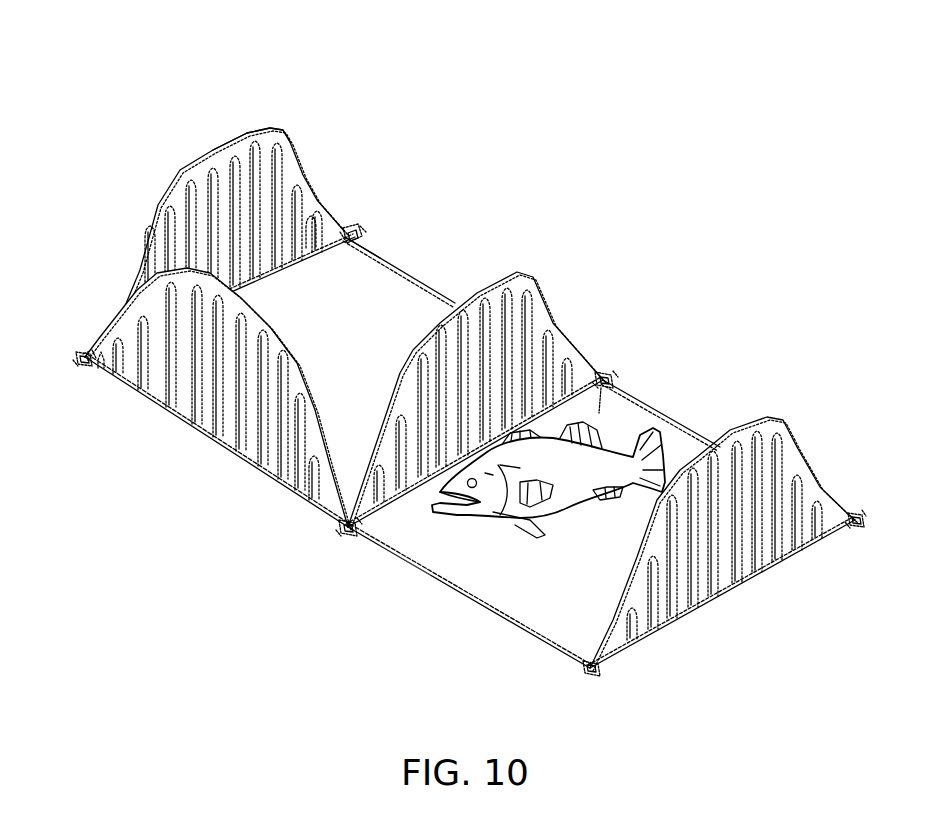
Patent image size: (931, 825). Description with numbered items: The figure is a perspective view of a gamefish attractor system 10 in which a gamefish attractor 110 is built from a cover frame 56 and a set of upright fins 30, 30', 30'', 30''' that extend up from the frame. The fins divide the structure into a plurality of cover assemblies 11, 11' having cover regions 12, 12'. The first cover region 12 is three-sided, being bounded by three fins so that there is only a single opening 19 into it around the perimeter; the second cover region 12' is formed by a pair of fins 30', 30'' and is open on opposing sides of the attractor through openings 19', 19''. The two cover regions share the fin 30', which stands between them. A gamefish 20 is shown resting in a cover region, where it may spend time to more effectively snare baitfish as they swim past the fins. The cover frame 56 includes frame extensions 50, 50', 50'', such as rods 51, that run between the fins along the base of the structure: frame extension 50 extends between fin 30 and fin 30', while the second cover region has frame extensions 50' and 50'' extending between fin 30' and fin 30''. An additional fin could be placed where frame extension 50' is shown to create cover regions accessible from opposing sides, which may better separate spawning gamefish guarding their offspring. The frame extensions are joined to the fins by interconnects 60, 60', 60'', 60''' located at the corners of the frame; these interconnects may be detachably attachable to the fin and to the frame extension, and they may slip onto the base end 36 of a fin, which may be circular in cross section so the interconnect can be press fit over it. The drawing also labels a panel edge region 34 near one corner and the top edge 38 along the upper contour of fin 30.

The gamefish attractor system 10 is at (147, 162).
The gamefish attractor 110 is at (217, 153).
The cover assembly 11 is at (437, 239).
The cover assembly 11' is at (735, 376).
The cover region 12 is at (387, 242).
The cover region 12' is at (690, 378).
The opening 19 is at (498, 242).
The opening 19' is at (640, 386).
The opening 19'' is at (489, 661).
The gamefish 20 is at (507, 500).
The fin 30 is at (207, 244).
The fin 30' is at (461, 401).
The fin 30'' is at (692, 546).
The fin 30''' is at (211, 399).
The panel lower edge 34 is at (346, 237).
The base end 36 is at (308, 224).
The panel top edge 38 is at (243, 127).
The frame extension 50 is at (415, 258).
The frame extension 50' is at (687, 402).
The frame extension 50'' is at (470, 596).
The rod 51 is at (287, 490).
The cover frame 56 is at (410, 572).
The interconnect 60 is at (362, 195).
The interconnect 60' is at (619, 350).
The interconnect 60'' is at (311, 554).
The corner connector (fourth) 60''' is at (61, 326).